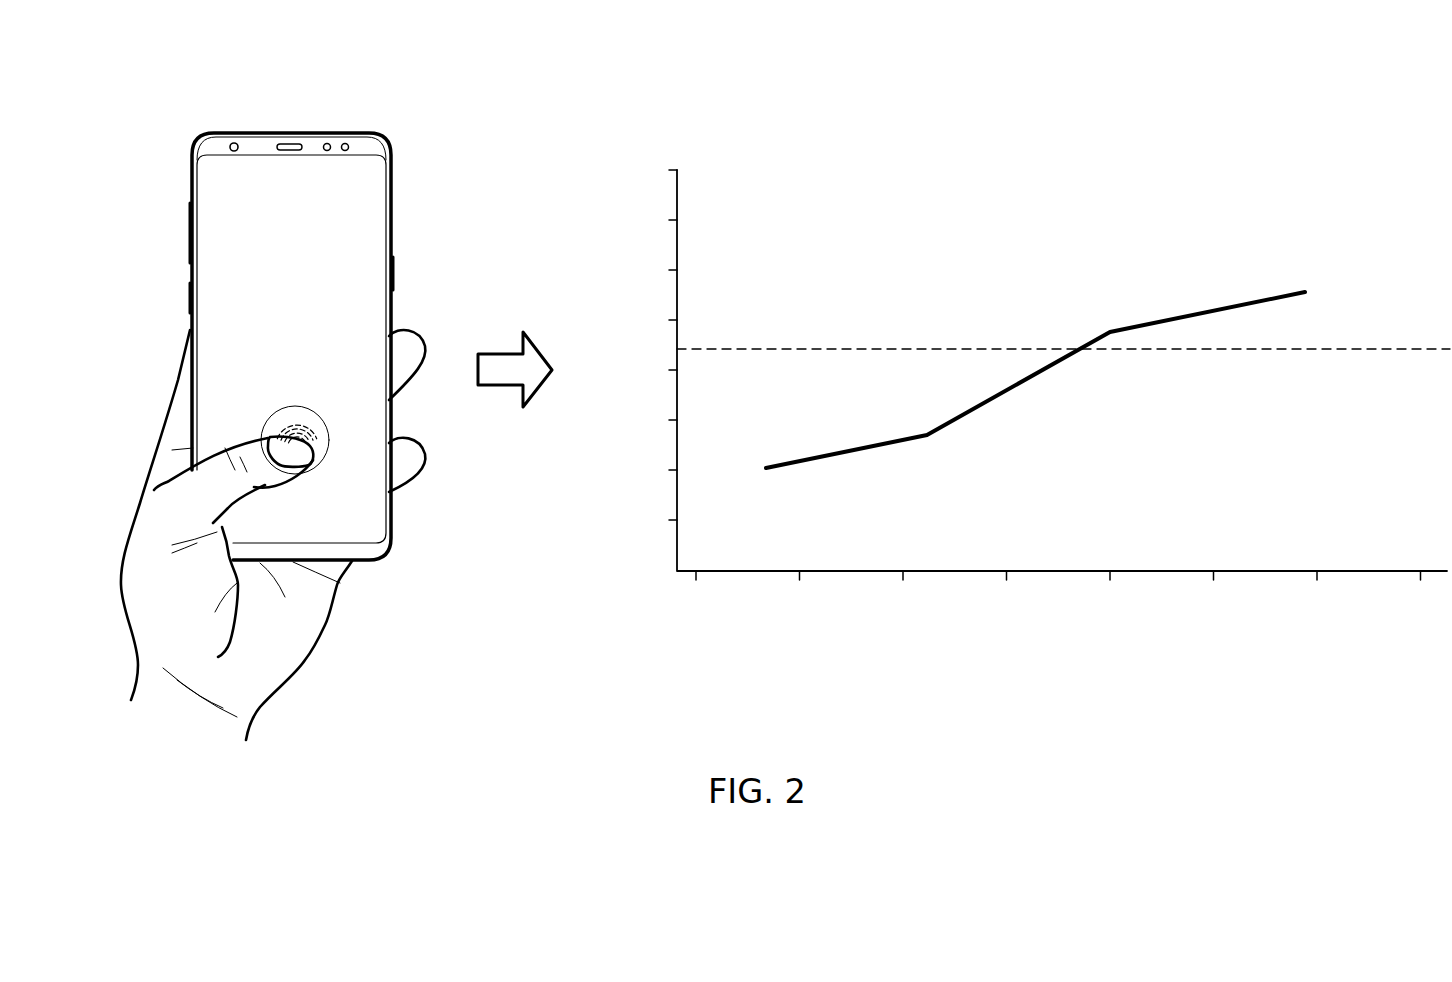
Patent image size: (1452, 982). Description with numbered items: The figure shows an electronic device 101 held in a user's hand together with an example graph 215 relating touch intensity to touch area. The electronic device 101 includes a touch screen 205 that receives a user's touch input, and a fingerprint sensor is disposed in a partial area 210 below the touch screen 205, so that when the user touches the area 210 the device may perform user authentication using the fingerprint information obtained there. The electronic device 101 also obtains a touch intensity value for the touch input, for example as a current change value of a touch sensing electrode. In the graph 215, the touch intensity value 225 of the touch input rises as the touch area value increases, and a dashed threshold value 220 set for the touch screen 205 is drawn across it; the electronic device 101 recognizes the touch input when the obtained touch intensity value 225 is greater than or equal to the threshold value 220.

The electronic device 101 is at (290, 133).
The touch screen 205 is at (333, 268).
The area 210 is at (328, 423).
The graph 215 is at (1019, 361).
The threshold value 220 is at (1372, 349).
The touch intensity value 225 is at (1202, 310).